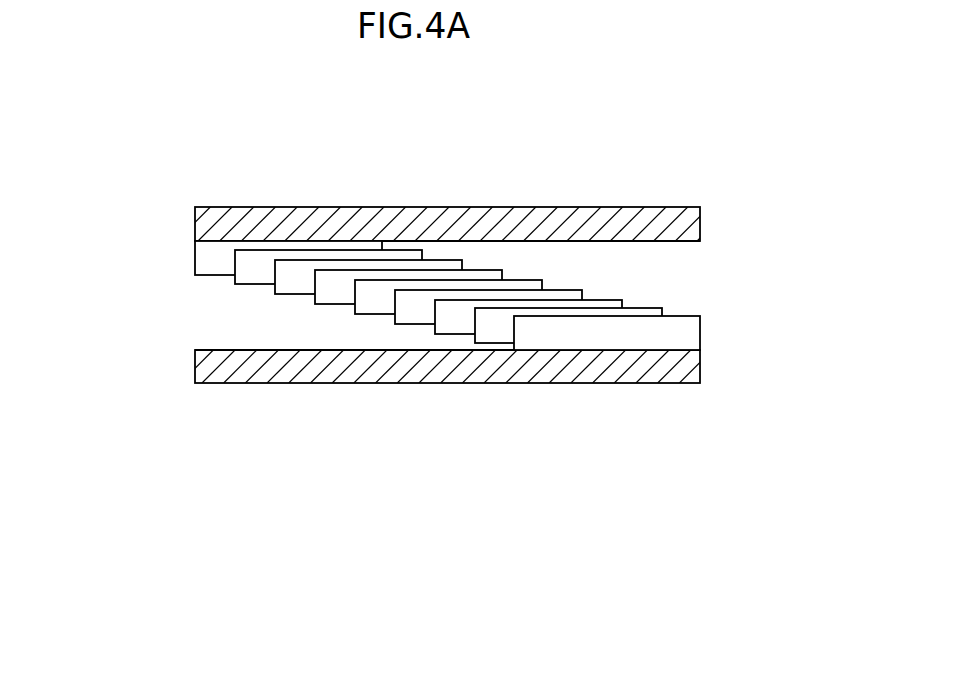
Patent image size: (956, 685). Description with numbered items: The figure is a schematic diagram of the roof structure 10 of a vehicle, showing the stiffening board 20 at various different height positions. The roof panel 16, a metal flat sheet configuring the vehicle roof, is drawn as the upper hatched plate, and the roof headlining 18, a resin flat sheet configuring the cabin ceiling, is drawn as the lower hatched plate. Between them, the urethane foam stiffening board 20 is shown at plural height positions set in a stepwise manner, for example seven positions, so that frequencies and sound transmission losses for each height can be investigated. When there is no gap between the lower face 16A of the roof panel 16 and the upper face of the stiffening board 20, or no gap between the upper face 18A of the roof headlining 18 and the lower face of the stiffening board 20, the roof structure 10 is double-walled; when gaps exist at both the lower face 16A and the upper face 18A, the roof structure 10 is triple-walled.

The roof structure 10 is at (565, 168).
The roof panel 16 is at (461, 205).
The lower face of the roof panel 16A is at (655, 241).
The roof headlining 18 is at (433, 386).
The upper face of the roof headlining 18A is at (240, 350).
The stiffening board 20 is at (256, 287).